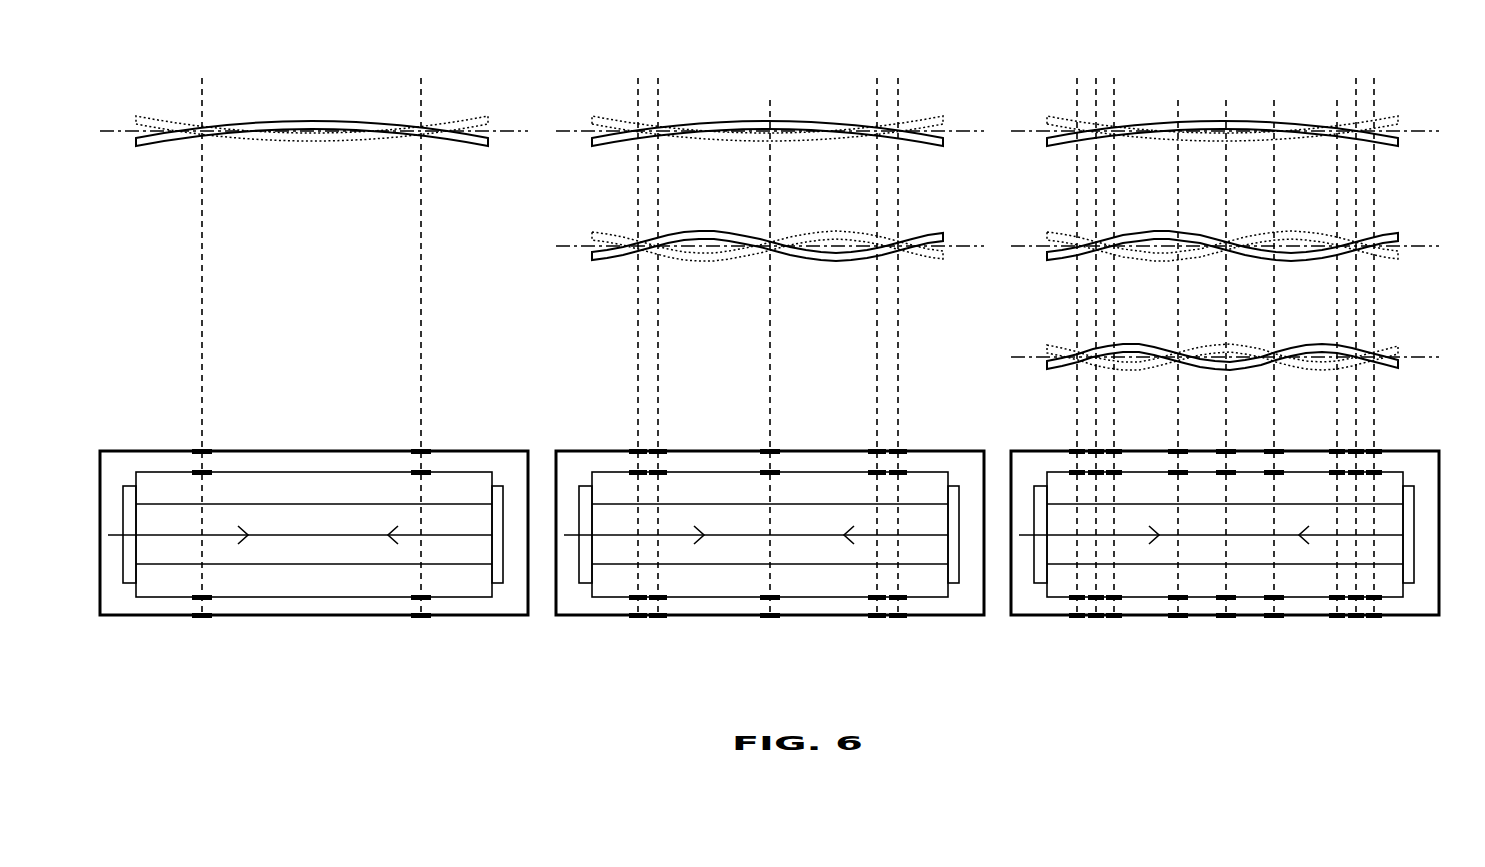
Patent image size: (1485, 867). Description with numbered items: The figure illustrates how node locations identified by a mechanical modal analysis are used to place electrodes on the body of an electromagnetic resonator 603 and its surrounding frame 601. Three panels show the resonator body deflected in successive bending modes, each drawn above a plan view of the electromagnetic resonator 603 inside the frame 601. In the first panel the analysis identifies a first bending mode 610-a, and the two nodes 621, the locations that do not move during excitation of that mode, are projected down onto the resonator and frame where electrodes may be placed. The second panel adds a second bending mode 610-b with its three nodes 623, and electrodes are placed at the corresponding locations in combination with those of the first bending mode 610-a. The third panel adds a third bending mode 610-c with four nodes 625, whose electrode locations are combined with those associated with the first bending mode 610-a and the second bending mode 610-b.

The frame 601 is at (178, 451).
The electromagnetic resonator 603 is at (335, 597).
The first bending mode 610-a is at (305, 121).
The second bending mode 610-b is at (920, 239).
The third bending mode 610-c is at (1380, 368).
The nodes 621 is at (201, 340).
The nodes 623 is at (637, 363).
The nodes 625 is at (1077, 425).